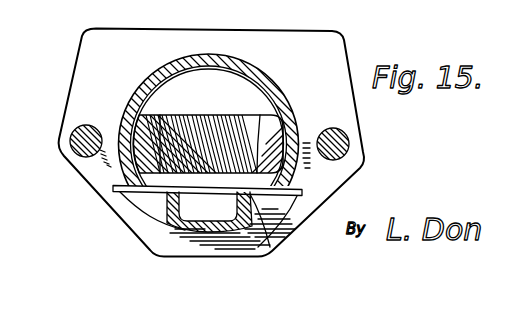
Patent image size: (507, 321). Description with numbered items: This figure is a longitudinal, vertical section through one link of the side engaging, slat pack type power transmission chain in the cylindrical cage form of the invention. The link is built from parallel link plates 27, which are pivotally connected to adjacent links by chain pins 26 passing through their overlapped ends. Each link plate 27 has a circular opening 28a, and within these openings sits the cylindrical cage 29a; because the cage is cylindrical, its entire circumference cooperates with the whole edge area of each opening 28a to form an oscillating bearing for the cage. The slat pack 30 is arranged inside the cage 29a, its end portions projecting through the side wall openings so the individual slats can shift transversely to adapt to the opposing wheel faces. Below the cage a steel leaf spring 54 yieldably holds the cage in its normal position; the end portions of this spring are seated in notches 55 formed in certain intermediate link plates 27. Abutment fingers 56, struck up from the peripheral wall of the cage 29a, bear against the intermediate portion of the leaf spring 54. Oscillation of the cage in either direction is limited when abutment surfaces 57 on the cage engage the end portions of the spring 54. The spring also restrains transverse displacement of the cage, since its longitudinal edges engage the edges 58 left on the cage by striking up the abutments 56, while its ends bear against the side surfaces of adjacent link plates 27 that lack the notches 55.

The chain pin 26 is at (69, 136).
The link plate 27 is at (74, 75).
The circular opening 28a is at (267, 70).
The cylindrical cage 29a is at (154, 62).
The slat pack 30 is at (204, 114).
The leaf spring 54 is at (268, 253).
The notch 55 is at (118, 192).
The abutment finger 56 is at (234, 199).
The abutment surface 57 is at (302, 172).
The edge 58 is at (162, 219).